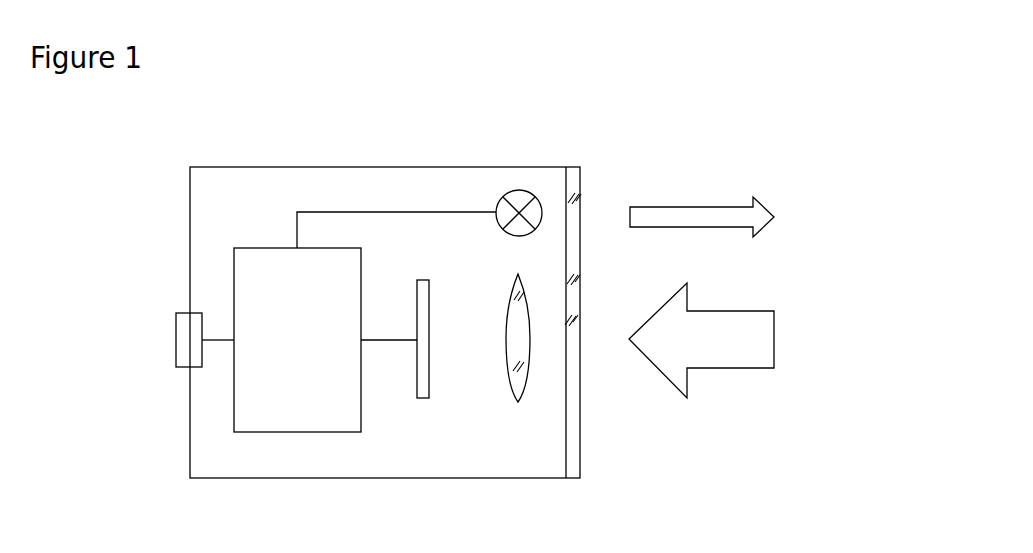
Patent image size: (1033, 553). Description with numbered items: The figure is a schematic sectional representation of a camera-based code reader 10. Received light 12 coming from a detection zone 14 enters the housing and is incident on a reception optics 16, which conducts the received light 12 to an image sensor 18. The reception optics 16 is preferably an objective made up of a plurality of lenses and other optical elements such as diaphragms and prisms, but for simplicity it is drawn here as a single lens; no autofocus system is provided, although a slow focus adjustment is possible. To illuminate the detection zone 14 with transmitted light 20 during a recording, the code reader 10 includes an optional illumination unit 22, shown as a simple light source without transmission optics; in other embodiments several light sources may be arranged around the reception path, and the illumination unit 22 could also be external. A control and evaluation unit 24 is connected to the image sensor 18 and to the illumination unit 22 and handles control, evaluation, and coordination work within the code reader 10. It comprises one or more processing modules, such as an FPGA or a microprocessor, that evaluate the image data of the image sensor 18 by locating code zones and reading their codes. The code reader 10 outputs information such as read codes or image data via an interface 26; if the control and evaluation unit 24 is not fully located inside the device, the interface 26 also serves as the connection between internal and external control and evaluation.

The camera-based code reader 10 is at (587, 88).
The received light 12 is at (718, 352).
The detection zone 14 is at (880, 128).
The reception optics 16 is at (512, 335).
The image sensor 18 is at (429, 315).
The transmitted light 20 is at (668, 210).
The illumination unit 22 is at (519, 207).
The control and evaluation unit 24 is at (233, 369).
The interface 26 is at (188, 340).